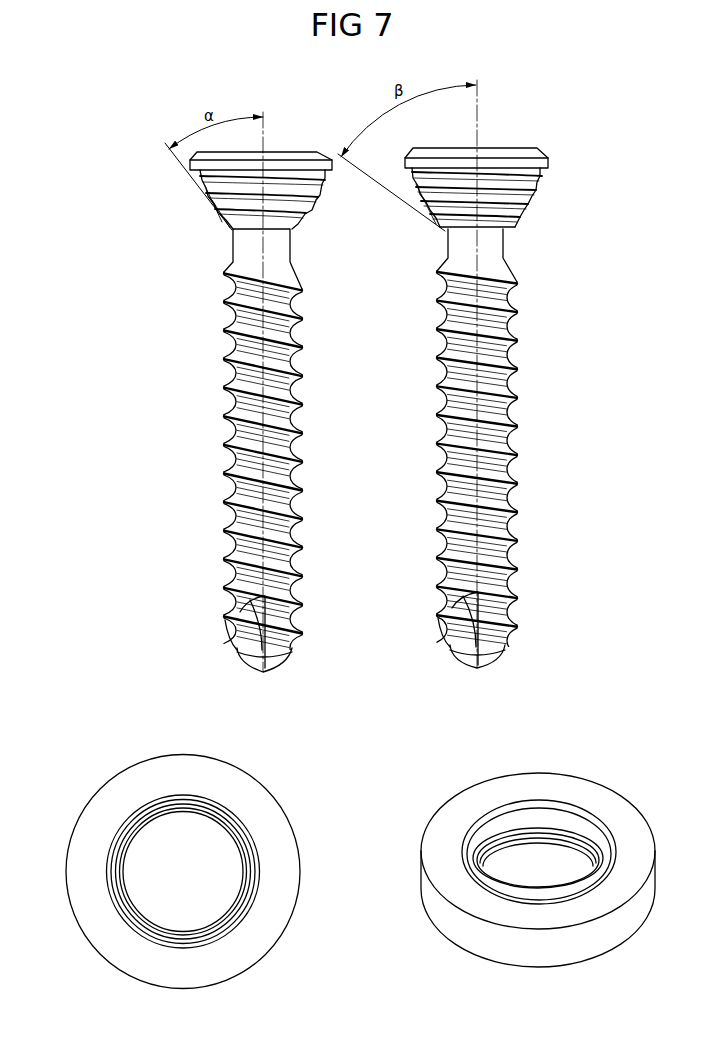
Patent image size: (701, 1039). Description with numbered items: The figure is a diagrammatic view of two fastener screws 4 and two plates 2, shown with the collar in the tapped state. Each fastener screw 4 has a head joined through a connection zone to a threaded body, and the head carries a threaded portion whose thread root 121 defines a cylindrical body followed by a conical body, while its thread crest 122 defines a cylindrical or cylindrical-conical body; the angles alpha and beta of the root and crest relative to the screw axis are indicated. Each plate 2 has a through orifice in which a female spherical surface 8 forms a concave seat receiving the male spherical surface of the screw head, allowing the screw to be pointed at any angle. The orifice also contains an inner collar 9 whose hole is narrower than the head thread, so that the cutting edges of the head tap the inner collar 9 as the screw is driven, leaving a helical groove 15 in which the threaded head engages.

The plate 2 is at (615, 807).
The fastener screw 4 is at (228, 378).
The female spherical surface 8 is at (555, 818).
The inner collar 9 is at (188, 932).
The helical groove 15 is at (130, 840).
The thread root 121 is at (531, 188).
The thread crest 122 is at (533, 202).